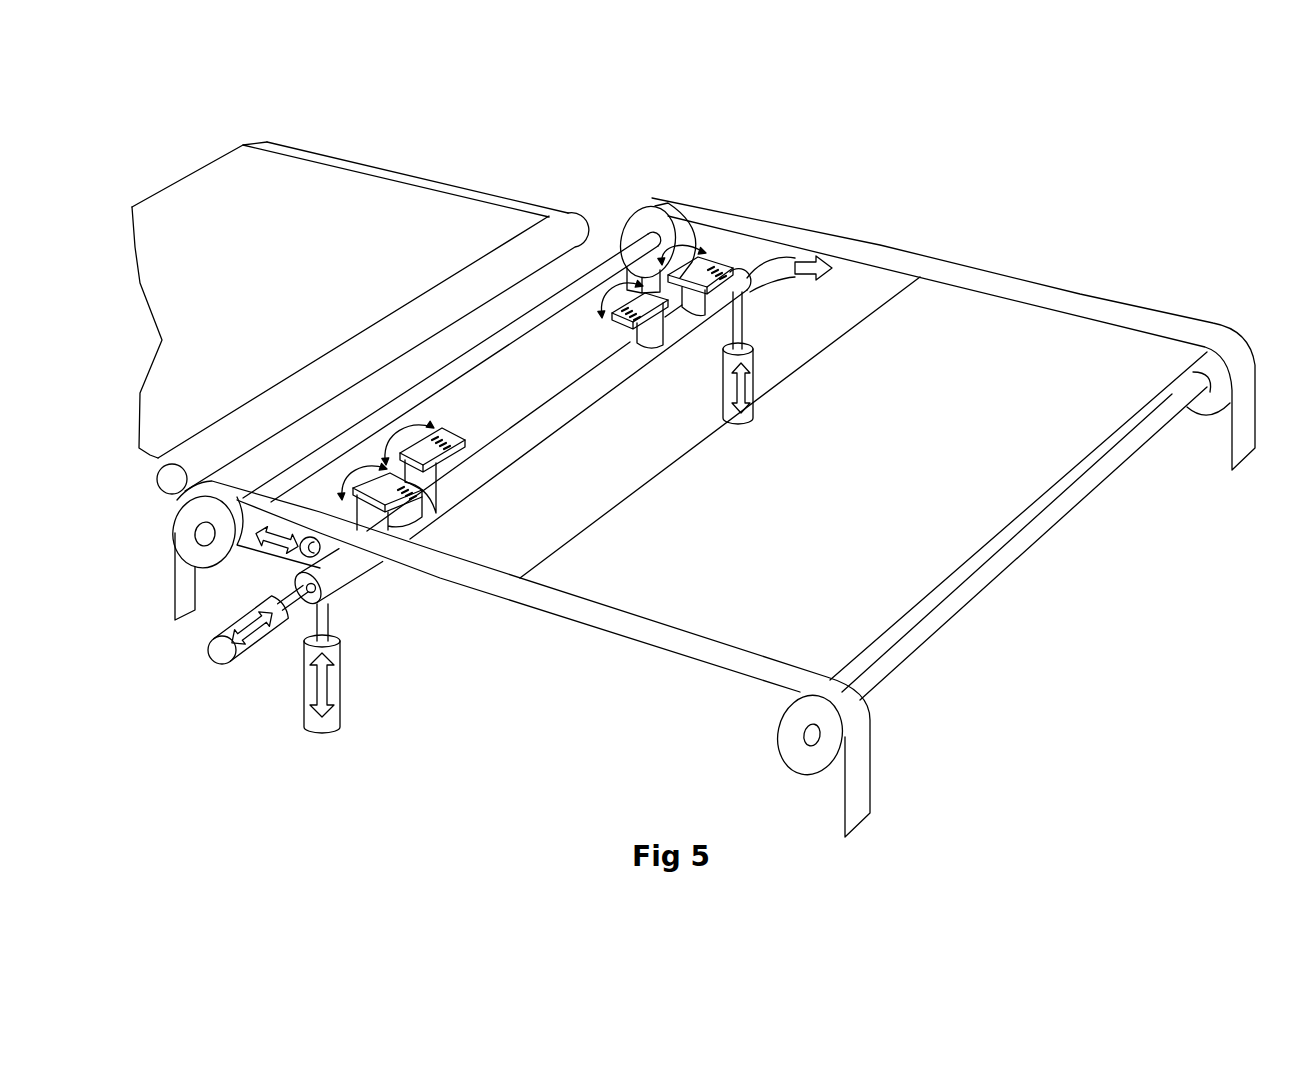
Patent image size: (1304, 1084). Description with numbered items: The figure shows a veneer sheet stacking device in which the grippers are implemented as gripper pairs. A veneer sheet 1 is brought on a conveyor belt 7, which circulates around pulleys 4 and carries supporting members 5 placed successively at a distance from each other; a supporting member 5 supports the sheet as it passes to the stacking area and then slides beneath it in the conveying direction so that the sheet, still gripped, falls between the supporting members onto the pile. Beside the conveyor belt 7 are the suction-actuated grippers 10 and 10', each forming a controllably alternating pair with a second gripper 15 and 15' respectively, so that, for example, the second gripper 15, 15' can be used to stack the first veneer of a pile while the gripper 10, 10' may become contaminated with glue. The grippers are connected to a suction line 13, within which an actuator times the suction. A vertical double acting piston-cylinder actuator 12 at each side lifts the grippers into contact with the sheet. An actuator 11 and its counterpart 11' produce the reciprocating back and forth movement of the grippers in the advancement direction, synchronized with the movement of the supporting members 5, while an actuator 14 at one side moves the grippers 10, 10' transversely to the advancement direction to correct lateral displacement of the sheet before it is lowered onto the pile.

The veneer sheet 1 is at (257, 178).
The pulley 4 is at (1210, 357).
The supporting member 5 is at (937, 507).
The conveyor belt 7 is at (953, 262).
The gripper 10 is at (343, 412).
The gripper 10' is at (662, 222).
The actuator 11 is at (505, 659).
The actuator 11' is at (469, 351).
The vertical double acting piston-cylinder actuator 12 is at (303, 722).
The suction line 13 is at (353, 567).
The actuator 14 is at (224, 650).
The second gripper 15 is at (444, 453).
The second gripper 15' is at (611, 324).